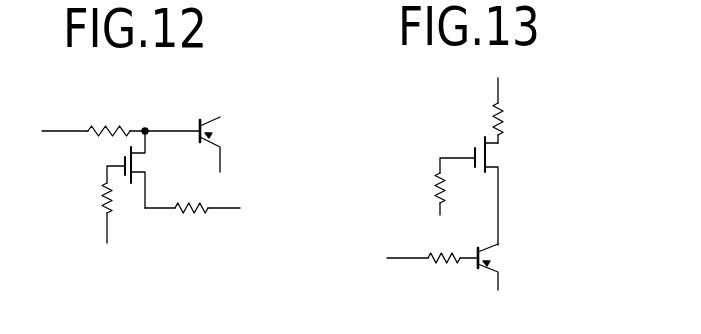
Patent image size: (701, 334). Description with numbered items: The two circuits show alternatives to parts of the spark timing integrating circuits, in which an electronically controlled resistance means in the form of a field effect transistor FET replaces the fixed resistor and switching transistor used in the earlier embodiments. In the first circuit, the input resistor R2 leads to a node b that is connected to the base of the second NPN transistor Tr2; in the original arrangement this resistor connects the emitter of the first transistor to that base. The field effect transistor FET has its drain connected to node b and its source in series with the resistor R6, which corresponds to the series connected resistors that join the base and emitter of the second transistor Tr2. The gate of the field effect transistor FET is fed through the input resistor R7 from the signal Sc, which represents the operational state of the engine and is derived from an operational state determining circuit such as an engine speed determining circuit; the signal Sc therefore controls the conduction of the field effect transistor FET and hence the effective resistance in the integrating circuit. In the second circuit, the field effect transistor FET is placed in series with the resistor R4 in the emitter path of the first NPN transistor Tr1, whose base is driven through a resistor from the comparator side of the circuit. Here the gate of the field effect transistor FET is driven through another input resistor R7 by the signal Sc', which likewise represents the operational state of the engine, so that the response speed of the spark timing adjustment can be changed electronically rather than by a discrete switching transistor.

In FIG. 12, the input resistor R2 is at (109, 120).
In FIG. 12, the node b is at (147, 119).
In FIG. 12, the field effect transistor FET is at (148, 169).
In FIG. 13, the field effect transistor FET is at (491, 191).
In FIG. 12, the input resistor R7 is at (95, 213).
In FIG. 13, the input resistor R7 is at (424, 194).
In FIG. 12, the signal Sc is at (110, 263).
In FIG. 12, the resistor R6 is at (192, 196).
In FIG. 12, the second NPN transistor Tr2 is at (211, 134).
In FIG. 13, the resistor R4 is at (513, 123).
In FIG. 13, the signal Sc' is at (449, 232).
In FIG. 13, the first NPN transistor Tr1 is at (490, 258).